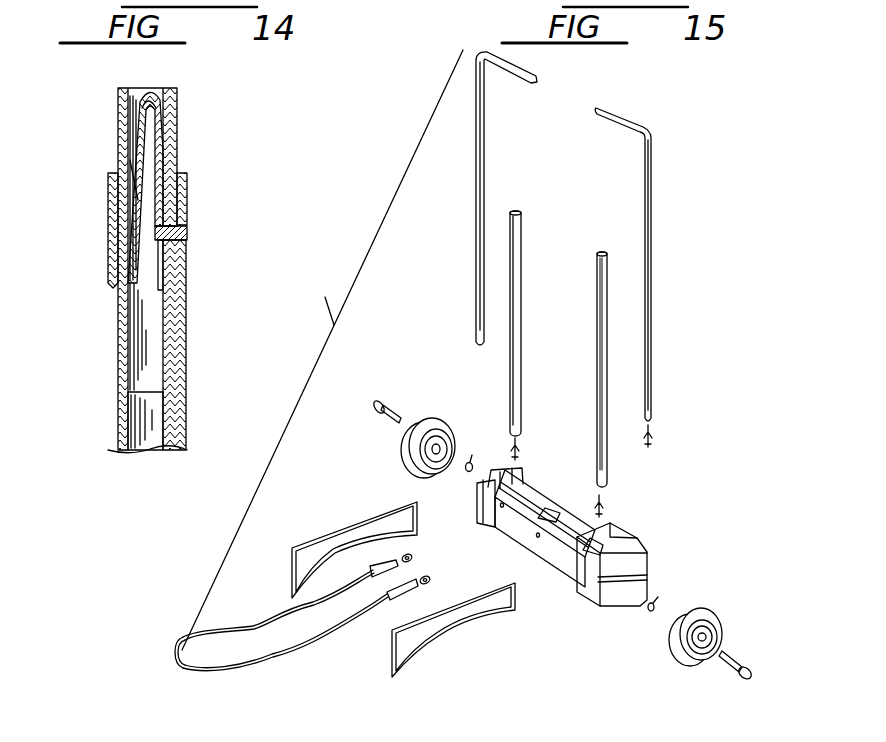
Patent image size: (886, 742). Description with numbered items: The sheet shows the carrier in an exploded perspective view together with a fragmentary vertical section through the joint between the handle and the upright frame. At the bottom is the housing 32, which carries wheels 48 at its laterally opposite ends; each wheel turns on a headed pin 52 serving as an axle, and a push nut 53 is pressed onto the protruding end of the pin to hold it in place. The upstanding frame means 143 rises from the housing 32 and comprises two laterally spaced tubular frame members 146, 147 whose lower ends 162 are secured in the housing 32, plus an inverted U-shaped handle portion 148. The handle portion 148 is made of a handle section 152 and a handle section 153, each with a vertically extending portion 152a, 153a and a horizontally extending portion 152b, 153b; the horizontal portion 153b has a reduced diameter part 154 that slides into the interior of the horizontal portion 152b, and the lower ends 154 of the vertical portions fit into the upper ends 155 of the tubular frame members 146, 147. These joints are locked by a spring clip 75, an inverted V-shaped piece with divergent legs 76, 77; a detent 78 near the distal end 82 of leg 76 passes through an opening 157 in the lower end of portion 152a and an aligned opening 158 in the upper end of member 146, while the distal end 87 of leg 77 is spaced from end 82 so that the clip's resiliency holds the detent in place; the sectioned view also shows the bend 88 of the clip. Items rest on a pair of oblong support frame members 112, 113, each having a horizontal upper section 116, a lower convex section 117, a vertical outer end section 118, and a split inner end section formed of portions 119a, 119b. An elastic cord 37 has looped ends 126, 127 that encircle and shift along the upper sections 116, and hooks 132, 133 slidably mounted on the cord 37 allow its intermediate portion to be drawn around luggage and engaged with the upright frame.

In FIG. 15, the housing 32 is at (568, 500).
In FIG. 15, the elastic cord 37 is at (252, 627).
In FIG. 15, the wheel 48 is at (440, 422).
In FIG. 15, the headed pin 52 is at (386, 404).
In FIG. 15, the push nut 53 is at (473, 460).
In FIG. 14, the spring clip 75 is at (130, 160).
In FIG. 15, the spring clip 75 is at (520, 448).
In FIG. 14, the leg 76 is at (165, 158).
In FIG. 14, the leg 77 is at (128, 197).
In FIG. 14, the detent 78 is at (187, 231).
In FIG. 14, the distal end 82 is at (187, 292).
In FIG. 14, the distal end 87 is at (108, 272).
In FIG. 14, the bend of tube 88 is at (148, 96).
In FIG. 15, the support frame member 112 is at (483, 591).
In FIG. 15, the support frame member 113 is at (306, 541).
In FIG. 15, the upper section 116 is at (347, 524).
In FIG. 15, the lower convex section 117 is at (335, 558).
In FIG. 15, the outer end section 118 is at (292, 570).
In FIG. 15, the inner end section portion 119a is at (417, 508).
In FIG. 15, the inner end section portion 119b is at (418, 530).
In FIG. 15, the cord end 126 is at (431, 580).
In FIG. 15, the cord end 127 is at (414, 558).
In FIG. 15, the hook 132 is at (182, 677).
In FIG. 15, the hook 133 is at (170, 660).
In FIG. 15, the upstanding frame means 143 is at (682, 246).
In FIG. 14, the tubular frame member 146 is at (175, 428).
In FIG. 15, the tubular frame member 146 is at (597, 342).
In FIG. 15, the tubular frame member 147 is at (520, 356).
In FIG. 15, the handle portion 148 is at (670, 122).
In FIG. 15, the handle section 152 is at (650, 180).
In FIG. 14, the vertically extending portion 152a is at (175, 116).
In FIG. 15, the vertically extending portion 152a is at (651, 305).
In FIG. 15, the horizontally extending portion 152b is at (634, 122).
In FIG. 15, the handle section 153 is at (472, 141).
In FIG. 15, the vertically extending portion 153a is at (478, 196).
In FIG. 15, the horizontally extending portion 153b is at (512, 72).
In FIG. 14, the reduced diameter part / lower end 154 is at (170, 340).
In FIG. 15, the reduced diameter part / lower end 154 is at (532, 74).
In FIG. 14, the upper end 155 is at (118, 310).
In FIG. 15, the upper end 155 is at (521, 216).
In FIG. 14, the opening 157 is at (188, 243).
In FIG. 14, the opening 158 is at (184, 218).
In FIG. 15, the lower end 162 is at (508, 422).